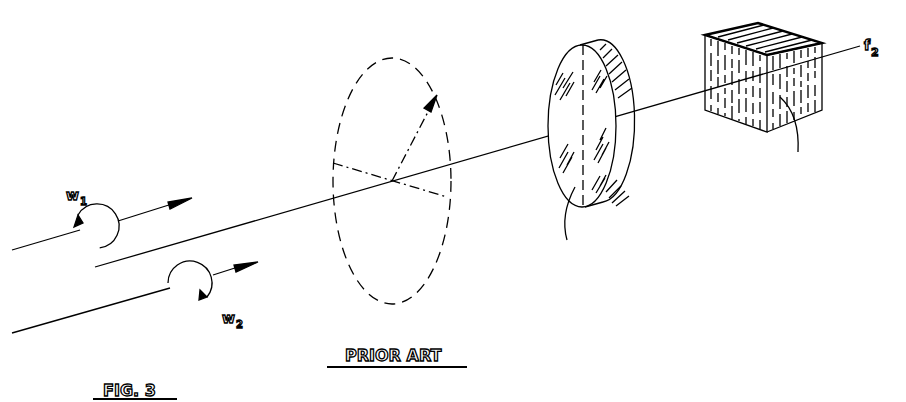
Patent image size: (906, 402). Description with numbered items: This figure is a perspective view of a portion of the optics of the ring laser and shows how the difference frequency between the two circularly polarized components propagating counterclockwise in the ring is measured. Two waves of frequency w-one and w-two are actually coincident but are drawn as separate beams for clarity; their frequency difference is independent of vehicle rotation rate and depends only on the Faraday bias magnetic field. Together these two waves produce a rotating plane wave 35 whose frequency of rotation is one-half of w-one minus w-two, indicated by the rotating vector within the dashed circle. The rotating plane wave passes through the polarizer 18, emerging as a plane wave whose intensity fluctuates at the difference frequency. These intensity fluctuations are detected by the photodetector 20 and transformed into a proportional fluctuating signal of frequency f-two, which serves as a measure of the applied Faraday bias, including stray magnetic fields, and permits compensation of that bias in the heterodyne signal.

The rotating plane wave 35 is at (416, 128).
The polarizer 18 is at (570, 143).
The photodetector 20 is at (733, 98).